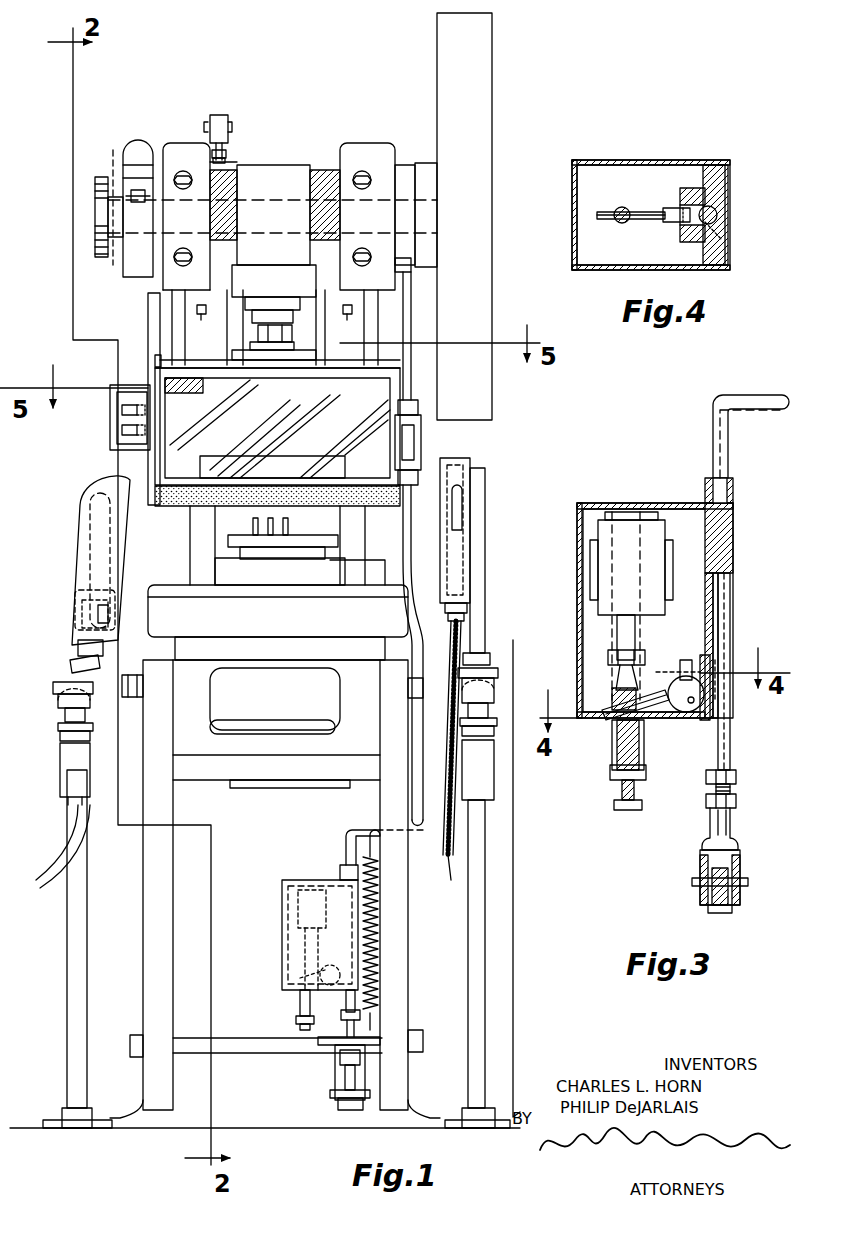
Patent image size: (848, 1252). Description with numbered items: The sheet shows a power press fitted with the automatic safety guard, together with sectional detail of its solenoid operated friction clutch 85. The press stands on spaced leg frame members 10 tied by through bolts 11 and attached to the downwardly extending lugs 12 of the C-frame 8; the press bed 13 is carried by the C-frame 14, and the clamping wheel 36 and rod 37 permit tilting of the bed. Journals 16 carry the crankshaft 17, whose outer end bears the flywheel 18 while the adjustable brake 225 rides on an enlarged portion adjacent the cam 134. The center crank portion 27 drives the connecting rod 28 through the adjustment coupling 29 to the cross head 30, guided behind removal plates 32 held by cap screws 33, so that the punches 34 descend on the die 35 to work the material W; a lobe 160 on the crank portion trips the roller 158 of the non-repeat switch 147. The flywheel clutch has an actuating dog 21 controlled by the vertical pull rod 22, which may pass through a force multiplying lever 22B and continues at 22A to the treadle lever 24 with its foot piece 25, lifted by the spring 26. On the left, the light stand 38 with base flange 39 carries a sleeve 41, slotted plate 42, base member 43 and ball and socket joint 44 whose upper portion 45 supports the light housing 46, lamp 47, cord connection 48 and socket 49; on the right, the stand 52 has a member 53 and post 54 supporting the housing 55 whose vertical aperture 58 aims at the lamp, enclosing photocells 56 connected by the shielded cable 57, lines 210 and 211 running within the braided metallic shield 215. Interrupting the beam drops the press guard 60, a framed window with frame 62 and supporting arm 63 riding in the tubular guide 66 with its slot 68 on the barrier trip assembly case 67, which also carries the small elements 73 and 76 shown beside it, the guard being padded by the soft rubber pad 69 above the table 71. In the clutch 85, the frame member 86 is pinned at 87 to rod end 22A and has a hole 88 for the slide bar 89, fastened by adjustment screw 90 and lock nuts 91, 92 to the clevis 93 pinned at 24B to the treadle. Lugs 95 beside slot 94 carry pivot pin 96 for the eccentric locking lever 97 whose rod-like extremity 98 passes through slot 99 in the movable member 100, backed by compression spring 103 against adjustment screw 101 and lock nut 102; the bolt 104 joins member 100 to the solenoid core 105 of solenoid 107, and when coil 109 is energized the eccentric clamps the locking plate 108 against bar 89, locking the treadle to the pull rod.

In FIG. 1, the C-frame 8 is at (267, 428).
In FIG. 1, the leg frame members 10 is at (150, 958).
In FIG. 1, the through bolts 11 is at (235, 1046).
In FIG. 1, the downwardly extending lugs 12 is at (192, 712).
In FIG. 1, the press bed 13 is at (278, 622).
In FIG. 1, the C-frame 14 is at (200, 530).
In FIG. 1, the journals 16 is at (170, 145).
In FIG. 1, the crankshaft 17 is at (112, 175).
In FIG. 1, the flywheel 18 is at (470, 133).
In FIG. 1, the actuating dog 21 is at (400, 270).
In FIG. 1, the vertical pull rod 22 is at (413, 362).
In FIG. 1, the lower end of clutch control rod 22A is at (346, 832).
In FIG. 3, the lower end of clutch control rod 22A is at (713, 420).
In FIG. 1, the force multiplying lever 22B is at (421, 437).
In FIG. 1, the treadle lever 24 is at (338, 1055).
In FIG. 3, the treadle lever 24 is at (722, 905).
In FIG. 3, the pin 24B is at (700, 883).
In FIG. 1, the foot piece 25 is at (320, 1045).
In FIG. 1, the spring 26 is at (380, 973).
In FIG. 1, the center crank portion 27 is at (283, 180).
In FIG. 1, the connecting rod 28 is at (288, 210).
In FIG. 1, the adjustment coupling 29 is at (276, 320).
In FIG. 1, the cross head 30 is at (338, 452).
In FIG. 1, the removal plates 32 is at (212, 300).
In FIG. 1, the cap screws 33 is at (275, 321).
In FIG. 1, the punches 34 is at (253, 528).
In FIG. 1, the die 35 is at (305, 562).
In FIG. 1, the clamping wheel 36 is at (298, 726).
In FIG. 1, the rod 37 is at (270, 688).
In FIG. 1, the light stand 38 is at (65, 933).
In FIG. 1, the base flange 39 is at (63, 1110).
In FIG. 1, the sleeve 41 is at (62, 790).
In FIG. 1, the slotted plate 42 is at (62, 735).
In FIG. 1, the base member 43 is at (66, 718).
In FIG. 1, the ball and socket joint 44 is at (58, 700).
In FIG. 1, the upper portion 45 is at (72, 665).
In FIG. 1, the light housing 46 is at (88, 587).
In FIG. 1, the incandescent lamp 47 is at (90, 545).
In FIG. 1, the electrical cord connection 48 is at (80, 628).
In FIG. 1, the socket 49 is at (82, 608).
In FIG. 1, the stand 52 is at (513, 865).
In FIG. 1, the member 53 is at (482, 658).
In FIG. 1, the post 54 is at (485, 572).
In FIG. 1, the housing 55 is at (470, 462).
In FIG. 1, the photocells 56 is at (470, 500).
In FIG. 1, the shielded cable 57 is at (462, 630).
In FIG. 1, the vertical aperture 58 is at (445, 505).
In FIG. 1, the press guard 60 is at (188, 455).
In FIG. 1, the window frame 62 is at (258, 380).
In FIG. 1, the supporting arm 63 is at (170, 395).
In FIG. 1, the tubular guide 66 is at (148, 300).
In FIG. 1, the barrier trip assembly case 67 is at (106, 441).
In FIG. 1, the slot 68 is at (157, 355).
In FIG. 1, the soft rubber pad 69 is at (194, 512).
In FIG. 1, the table 71 is at (388, 583).
In FIG. 1, the contact 73 is at (122, 428).
In FIG. 1, the contact 76 is at (122, 411).
In FIG. 1, the solenoid operated friction clutch 85 is at (280, 898).
In FIG. 3, the solenoid operated friction clutch 85 is at (626, 498).
In FIG. 4, the solenoid operated friction clutch 85 is at (616, 156).
In FIG. 3, the frame member 86 is at (725, 540).
In FIG. 4, the frame member 86 is at (725, 172).
In FIG. 3, the pin 87 is at (705, 488).
In FIG. 3, the vertical hole 88 is at (722, 585).
In FIG. 1, the cylindrical slide bar 89 is at (346, 1000).
In FIG. 3, the cylindrical slide bar 89 is at (728, 598).
In FIG. 4, the cylindrical slide bar 89 is at (717, 212).
In FIG. 3, the adjustment screw 90 is at (730, 788).
In FIG. 1, the lock nut 91 is at (341, 1017).
In FIG. 3, the lock nut 91 is at (730, 770).
In FIG. 3, the lock nut 92 is at (736, 800).
In FIG. 3, the clevis 93 is at (724, 822).
In FIG. 3, the slot 94 is at (688, 650).
In FIG. 3, the lugs 95 is at (700, 665).
In FIG. 4, the lugs 95 is at (692, 188).
In FIG. 3, the pivot pin 96 is at (689, 660).
In FIG. 4, the pivot pin 96 is at (690, 245).
In FIG. 1, the eccentric portion of locking lever 97 is at (325, 968).
In FIG. 3, the eccentric portion of locking lever 97 is at (680, 685).
In FIG. 4, the eccentric portion of locking lever 97 is at (672, 208).
In FIG. 1, the rod-like extremity 98 is at (297, 985).
In FIG. 3, the rod-like extremity 98 is at (605, 712).
In FIG. 4, the rod-like extremity 98 is at (597, 216).
In FIG. 3, the slot 99 is at (615, 697).
In FIG. 4, the slot 99 is at (622, 205).
In FIG. 1, the vertically movable member 100 is at (300, 1005).
In FIG. 3, the vertically movable member 100 is at (618, 683).
In FIG. 4, the vertically movable member 100 is at (620, 225).
In FIG. 1, the adjustment screw 101 is at (296, 1025).
In FIG. 3, the adjustment screw 101 is at (622, 753).
In FIG. 3, the lock nut 102 is at (646, 772).
In FIG. 3, the compression spring 103 is at (640, 738).
In FIG. 3, the bolt 104 is at (608, 660).
In FIG. 1, the solenoid core 105 is at (305, 948).
In FIG. 3, the solenoid core 105 is at (620, 638).
In FIG. 3, the solenoid assembly 107 is at (620, 580).
In FIG. 3, the locking plate 108 is at (720, 660).
In FIG. 4, the locking plate 108 is at (712, 230).
In FIG. 1, the coil 109 is at (298, 908).
In FIG. 3, the coil 109 is at (660, 544).
In FIG. 1, the cam 134 is at (95, 188).
In FIG. 1, the non-repeat switch 147 is at (219, 110).
In FIG. 1, the roller 158 is at (226, 150).
In FIG. 1, the lobe 160 is at (230, 163).
In FIG. 1, the line 210 is at (460, 870).
In FIG. 1, the shielded line 211 is at (448, 866).
In FIG. 1, the braided metallic shield 215 is at (448, 630).
In FIG. 1, the adjustable brake 225 is at (136, 150).
In FIG. 1, the material W is at (297, 547).